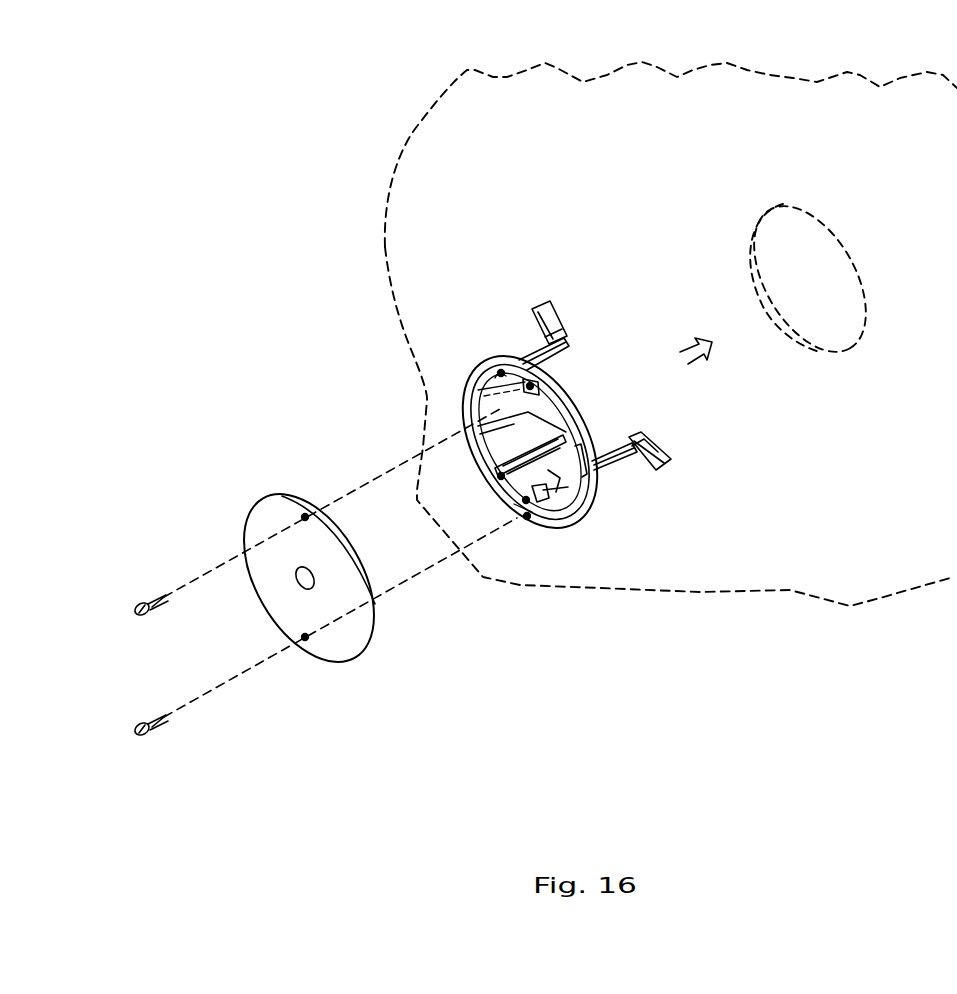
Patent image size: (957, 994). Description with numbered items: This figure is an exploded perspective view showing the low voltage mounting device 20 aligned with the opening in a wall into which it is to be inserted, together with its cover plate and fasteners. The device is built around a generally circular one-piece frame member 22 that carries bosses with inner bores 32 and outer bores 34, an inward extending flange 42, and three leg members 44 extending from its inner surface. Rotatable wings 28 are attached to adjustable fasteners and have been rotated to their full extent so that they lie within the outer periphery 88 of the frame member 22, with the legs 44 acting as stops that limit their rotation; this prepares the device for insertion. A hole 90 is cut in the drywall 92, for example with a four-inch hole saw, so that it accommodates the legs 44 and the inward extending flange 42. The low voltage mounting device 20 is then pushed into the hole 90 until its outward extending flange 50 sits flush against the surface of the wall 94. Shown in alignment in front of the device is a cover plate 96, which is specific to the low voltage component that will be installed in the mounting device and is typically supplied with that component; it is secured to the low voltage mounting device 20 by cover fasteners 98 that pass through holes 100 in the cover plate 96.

The low voltage mounting device 20 is at (436, 366).
The frame member 22 is at (485, 370).
The rotatable wings 28 is at (546, 303).
The inner bores 32 is at (527, 408).
The outer bores 34 is at (520, 392).
The inward extending flange 42 is at (483, 437).
The leg members 44 is at (531, 352).
The outward extending flange 50 is at (580, 520).
The outer periphery 88 is at (528, 519).
The hole 90 is at (799, 222).
The drywall 92 is at (757, 260).
The wall 94 is at (886, 278).
The cover plate 96 is at (333, 608).
The cover fasteners 98 is at (142, 604).
The holes 100 is at (305, 515).